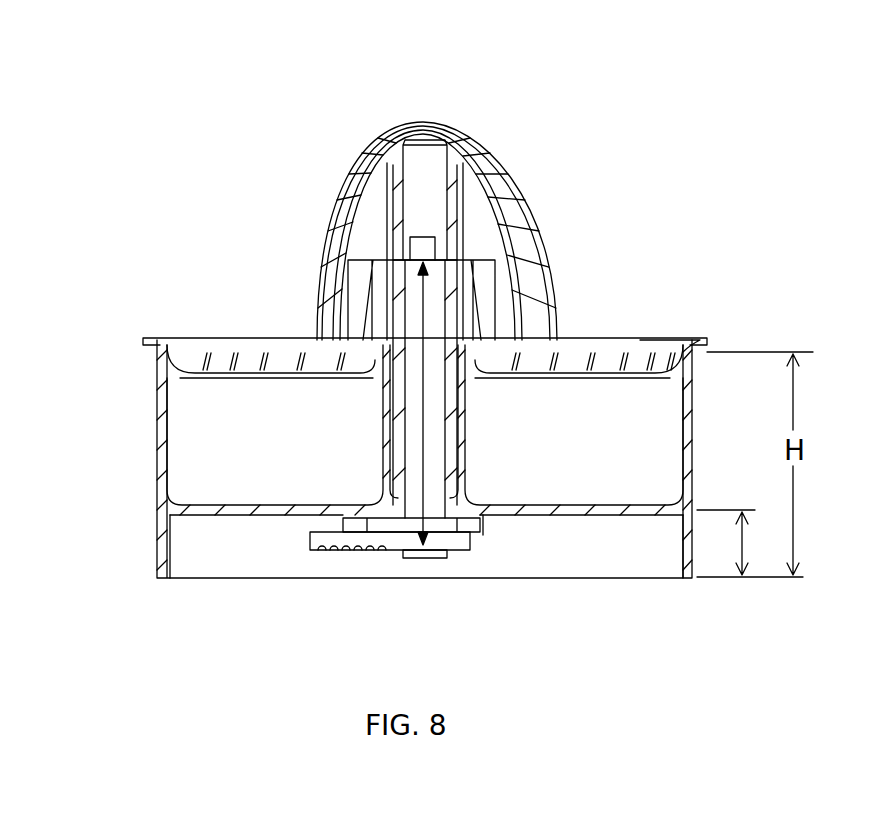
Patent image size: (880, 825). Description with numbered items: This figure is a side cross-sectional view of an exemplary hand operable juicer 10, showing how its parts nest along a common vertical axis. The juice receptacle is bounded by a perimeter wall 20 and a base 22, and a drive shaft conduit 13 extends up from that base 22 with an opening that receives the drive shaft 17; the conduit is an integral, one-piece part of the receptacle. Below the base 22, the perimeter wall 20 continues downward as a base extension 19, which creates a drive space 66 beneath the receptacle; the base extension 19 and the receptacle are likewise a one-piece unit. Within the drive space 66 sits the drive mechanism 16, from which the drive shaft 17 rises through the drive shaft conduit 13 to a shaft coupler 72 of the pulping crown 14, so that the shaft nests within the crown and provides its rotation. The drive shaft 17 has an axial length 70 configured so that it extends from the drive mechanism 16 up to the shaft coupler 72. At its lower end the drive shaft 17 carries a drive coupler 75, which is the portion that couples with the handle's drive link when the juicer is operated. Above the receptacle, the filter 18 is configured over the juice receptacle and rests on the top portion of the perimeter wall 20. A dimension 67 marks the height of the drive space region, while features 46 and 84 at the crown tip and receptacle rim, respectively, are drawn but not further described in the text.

The hand operable juicer 10 is at (182, 148).
The drive shaft conduit 13 is at (338, 280).
The pulping crown 14 is at (372, 195).
The drive mechanism 16 is at (362, 548).
The drive shaft 17 is at (427, 347).
The filter 18 is at (212, 340).
The base extension 19 is at (155, 525).
The perimeter wall 20 is at (155, 440).
The base 22 is at (255, 517).
The reamer tip 46 is at (421, 120).
The drive space 66 is at (557, 550).
The base height dimension 67 is at (745, 538).
The axial length 70 is at (470, 297).
The shaft coupler 72 is at (470, 158).
The drive coupler 75 is at (440, 552).
The basin rim 84 is at (640, 340).